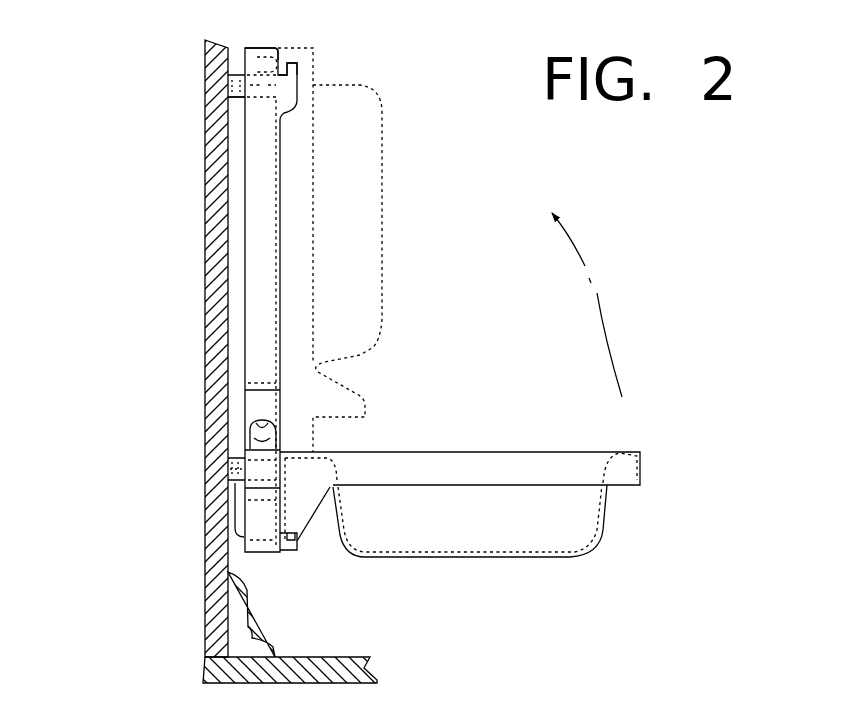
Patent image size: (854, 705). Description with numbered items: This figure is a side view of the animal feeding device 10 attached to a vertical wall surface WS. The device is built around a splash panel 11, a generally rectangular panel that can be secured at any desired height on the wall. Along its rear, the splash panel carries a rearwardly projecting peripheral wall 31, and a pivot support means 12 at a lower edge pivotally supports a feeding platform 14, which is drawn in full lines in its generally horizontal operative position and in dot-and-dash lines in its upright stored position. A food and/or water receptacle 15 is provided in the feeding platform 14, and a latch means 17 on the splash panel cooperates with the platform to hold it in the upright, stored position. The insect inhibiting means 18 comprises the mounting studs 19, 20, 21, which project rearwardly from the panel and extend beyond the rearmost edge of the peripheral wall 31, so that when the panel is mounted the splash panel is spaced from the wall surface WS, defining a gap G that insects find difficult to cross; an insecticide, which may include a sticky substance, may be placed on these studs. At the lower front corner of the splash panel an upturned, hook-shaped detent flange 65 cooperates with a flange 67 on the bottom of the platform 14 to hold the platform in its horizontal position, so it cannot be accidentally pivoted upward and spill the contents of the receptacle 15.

The animal feeding device 10 is at (634, 340).
The splash panel 11 is at (243, 276).
The pivot support means 12 is at (247, 453).
The feeding platform 14 is at (370, 93).
The food and/or water receptacle 15 is at (500, 552).
The latch means 17 is at (297, 75).
The insect inhibiting means 18 is at (235, 62).
The mounting stud 19 is at (235, 99).
The mounting stud 20 is at (222, 542).
The mounting stud 21 is at (236, 469).
The peripheral wall 31 is at (258, 47).
The detent flange 65 is at (297, 541).
The flange 67 is at (307, 523).
The wall surface WS is at (225, 218).
The gap G is at (240, 333).